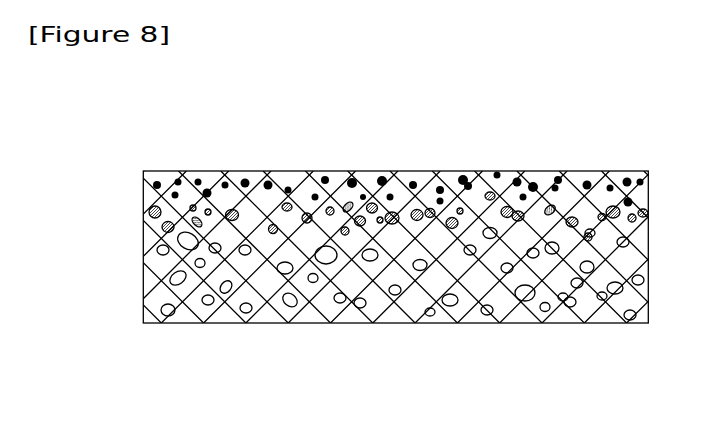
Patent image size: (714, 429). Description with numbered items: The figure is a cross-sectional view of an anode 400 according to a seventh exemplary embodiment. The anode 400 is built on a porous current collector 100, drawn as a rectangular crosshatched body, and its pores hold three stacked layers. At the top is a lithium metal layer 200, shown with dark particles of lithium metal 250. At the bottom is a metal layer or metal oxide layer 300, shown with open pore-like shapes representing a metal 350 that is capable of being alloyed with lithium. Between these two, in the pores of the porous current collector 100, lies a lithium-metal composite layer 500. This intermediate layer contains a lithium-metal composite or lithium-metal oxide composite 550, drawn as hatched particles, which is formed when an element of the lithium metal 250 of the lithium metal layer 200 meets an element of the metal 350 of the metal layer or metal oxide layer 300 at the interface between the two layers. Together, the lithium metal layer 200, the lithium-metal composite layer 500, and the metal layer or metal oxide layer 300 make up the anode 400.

The porous current collector 100 is at (357, 318).
The lithium metal layer 200 is at (128, 170).
The lithium metal 250 is at (377, 171).
The metal layer or metal oxide layer 300 is at (128, 235).
The metal capable of being alloyed with lithium 350 is at (602, 298).
The anode 400 is at (78, 172).
The lithium-metal composite layer 500 is at (128, 198).
The lithium-metal composite or lithium-metal oxide composite 550 is at (275, 225).